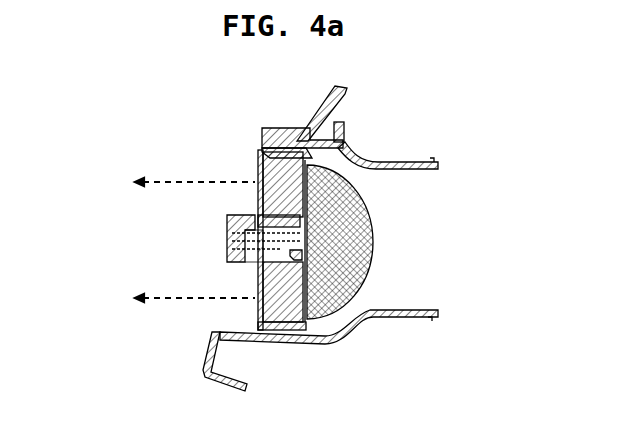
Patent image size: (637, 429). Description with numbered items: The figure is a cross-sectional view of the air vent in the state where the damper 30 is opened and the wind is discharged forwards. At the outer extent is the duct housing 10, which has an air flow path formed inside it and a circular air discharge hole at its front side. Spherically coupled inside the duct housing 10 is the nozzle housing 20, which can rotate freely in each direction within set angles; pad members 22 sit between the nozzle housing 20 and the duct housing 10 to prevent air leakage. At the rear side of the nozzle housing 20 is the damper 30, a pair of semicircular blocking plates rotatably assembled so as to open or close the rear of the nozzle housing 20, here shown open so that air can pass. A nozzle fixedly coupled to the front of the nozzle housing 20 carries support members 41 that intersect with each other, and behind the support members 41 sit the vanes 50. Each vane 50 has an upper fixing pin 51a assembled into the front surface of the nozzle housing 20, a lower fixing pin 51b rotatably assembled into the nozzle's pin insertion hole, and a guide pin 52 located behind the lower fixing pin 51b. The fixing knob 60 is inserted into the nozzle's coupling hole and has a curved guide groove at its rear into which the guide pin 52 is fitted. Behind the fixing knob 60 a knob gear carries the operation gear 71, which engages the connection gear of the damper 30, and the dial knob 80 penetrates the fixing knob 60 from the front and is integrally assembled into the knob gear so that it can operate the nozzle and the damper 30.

The duct housing 10 is at (363, 160).
The nozzle housing 20 is at (272, 132).
The pad members 22 is at (300, 132).
The damper 30 is at (352, 300).
The support members 41 is at (258, 205).
The vanes 50 is at (263, 178).
The upper fixing pin 51a is at (260, 320).
The lower fixing pin 51b is at (290, 257).
The guide pin 52 is at (263, 292).
The fixing knob 60 is at (258, 214).
The operation gear 71 is at (363, 199).
The dial knob 80 is at (228, 232).